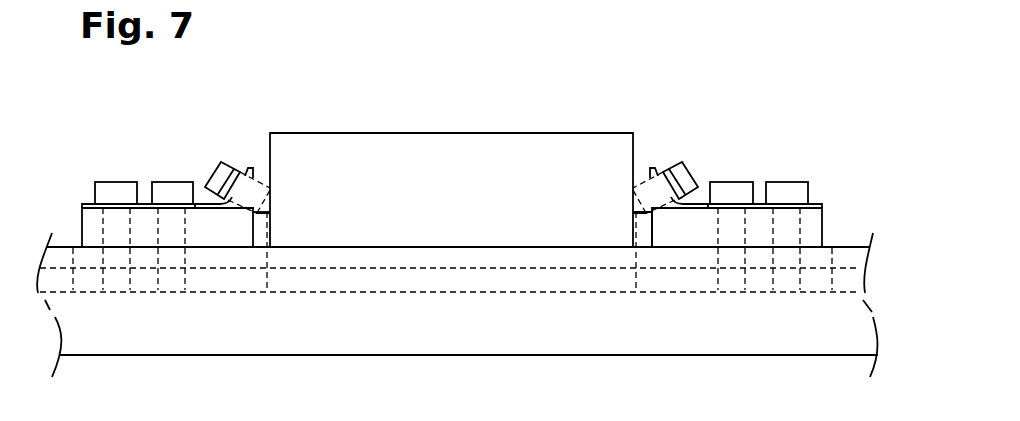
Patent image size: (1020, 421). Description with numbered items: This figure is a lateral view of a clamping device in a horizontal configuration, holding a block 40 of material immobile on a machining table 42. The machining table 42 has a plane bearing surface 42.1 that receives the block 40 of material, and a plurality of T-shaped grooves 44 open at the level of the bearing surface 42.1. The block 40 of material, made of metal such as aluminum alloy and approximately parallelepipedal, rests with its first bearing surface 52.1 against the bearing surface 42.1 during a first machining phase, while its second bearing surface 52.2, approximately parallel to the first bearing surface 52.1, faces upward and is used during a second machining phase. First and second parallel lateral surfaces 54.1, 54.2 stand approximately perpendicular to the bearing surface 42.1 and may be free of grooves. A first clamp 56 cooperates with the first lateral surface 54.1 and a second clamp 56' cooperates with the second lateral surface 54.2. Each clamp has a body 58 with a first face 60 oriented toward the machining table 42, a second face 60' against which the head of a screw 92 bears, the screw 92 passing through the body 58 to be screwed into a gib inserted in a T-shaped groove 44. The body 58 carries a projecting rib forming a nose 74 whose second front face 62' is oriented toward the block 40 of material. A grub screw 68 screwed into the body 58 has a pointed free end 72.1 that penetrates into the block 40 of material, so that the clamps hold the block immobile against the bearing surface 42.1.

The block of material 40 is at (427, 165).
The machining table 42 is at (812, 322).
The bearing surface 42.1 is at (845, 247).
The T-shaped grooves 44 is at (852, 278).
The first bearing surface 52.1 is at (342, 248).
The second bearing surface 52.2 is at (458, 133).
The first lateral surface 54.1 is at (633, 147).
The second lateral surface 54.2 is at (270, 147).
The clamp 56 is at (770, 138).
The second clamp 56' is at (131, 140).
The body 58 is at (134, 222).
The first face 60 is at (452, 300).
The second face 60' is at (443, 172).
The second front face 62' is at (451, 155).
The grub screw 68 is at (214, 157).
The pointed free end 72.1 is at (268, 210).
The nose 74 is at (263, 222).
The screw 92 is at (165, 172).